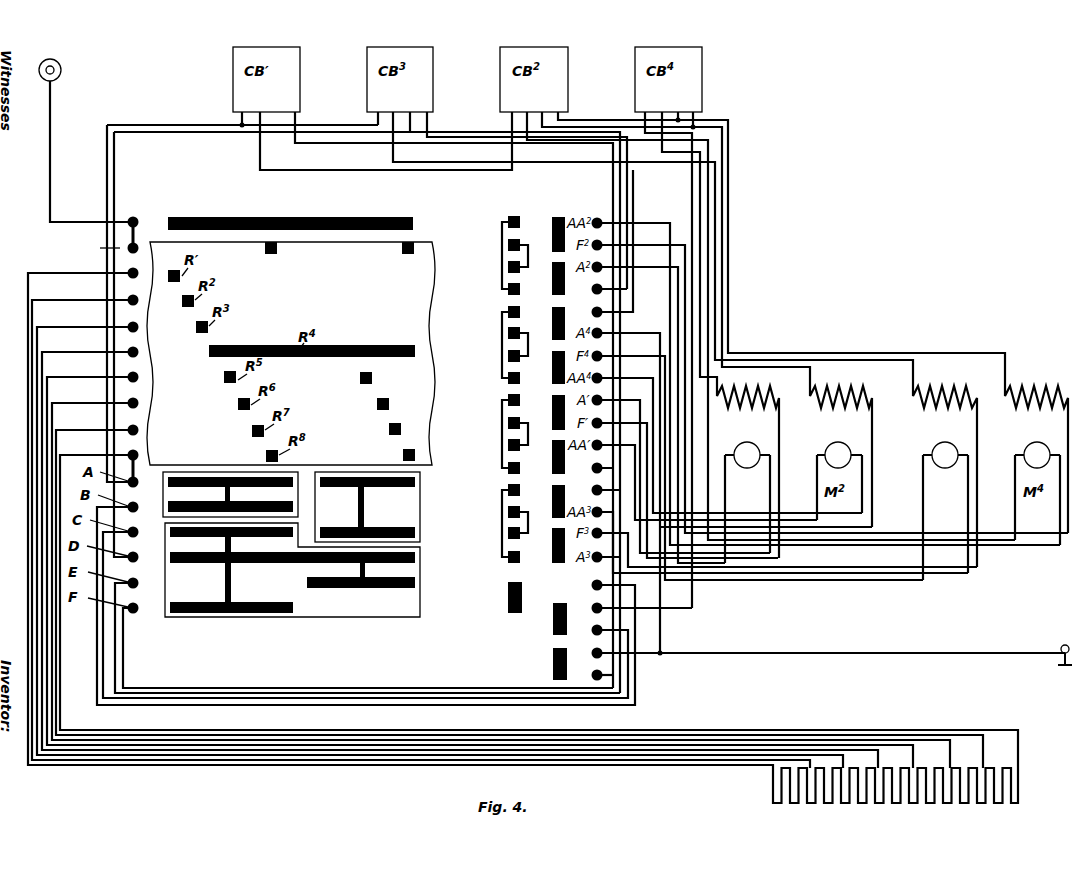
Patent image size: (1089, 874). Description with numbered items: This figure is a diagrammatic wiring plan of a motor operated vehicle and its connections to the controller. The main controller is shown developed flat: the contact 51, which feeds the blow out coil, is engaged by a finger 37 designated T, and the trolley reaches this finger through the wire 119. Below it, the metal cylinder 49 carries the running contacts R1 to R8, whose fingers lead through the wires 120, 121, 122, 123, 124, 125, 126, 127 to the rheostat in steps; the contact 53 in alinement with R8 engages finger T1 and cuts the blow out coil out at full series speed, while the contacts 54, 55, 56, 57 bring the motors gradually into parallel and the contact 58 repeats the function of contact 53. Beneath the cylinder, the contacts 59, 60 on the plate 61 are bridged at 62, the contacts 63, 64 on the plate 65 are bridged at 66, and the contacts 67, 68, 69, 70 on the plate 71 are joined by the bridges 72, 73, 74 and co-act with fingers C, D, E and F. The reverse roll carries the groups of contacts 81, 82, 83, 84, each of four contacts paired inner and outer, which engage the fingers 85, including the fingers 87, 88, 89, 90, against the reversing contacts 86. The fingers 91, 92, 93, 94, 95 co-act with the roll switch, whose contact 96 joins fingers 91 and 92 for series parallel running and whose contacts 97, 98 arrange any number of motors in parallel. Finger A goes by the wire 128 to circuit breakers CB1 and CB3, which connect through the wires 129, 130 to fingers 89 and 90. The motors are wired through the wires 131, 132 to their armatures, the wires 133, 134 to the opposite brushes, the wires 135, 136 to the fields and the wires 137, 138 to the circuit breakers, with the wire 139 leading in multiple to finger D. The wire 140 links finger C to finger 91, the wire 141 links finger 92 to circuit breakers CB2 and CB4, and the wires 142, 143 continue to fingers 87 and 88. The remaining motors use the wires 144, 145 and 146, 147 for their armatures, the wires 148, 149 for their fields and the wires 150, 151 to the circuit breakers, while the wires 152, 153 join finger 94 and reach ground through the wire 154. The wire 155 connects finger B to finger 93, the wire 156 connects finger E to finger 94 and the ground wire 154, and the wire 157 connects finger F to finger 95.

The contact finger 37 is at (137, 217).
The metal cylinder 49 is at (418, 317).
The contact 51 is at (273, 216).
The contact 53 is at (279, 250).
The contact 54 is at (359, 378).
The contact 55 is at (376, 404).
The contact 56 is at (388, 429).
The contact 57 is at (402, 456).
The contact 58 is at (401, 251).
The contact 59 is at (205, 472).
The contact 60 is at (165, 506).
The plate 61 is at (163, 494).
The bridge 62 is at (237, 476).
The contact 63 is at (416, 481).
The contact 64 is at (416, 534).
The plate 65 is at (426, 514).
The bridge 66 is at (370, 503).
The contact 67 is at (170, 541).
The contact 68 is at (285, 563).
The contact 69 is at (395, 590).
The contact 70 is at (300, 616).
The plate 71 is at (385, 612).
The bridge 72 is at (214, 558).
The bridge 73 is at (370, 568).
The bridge 74 is at (248, 570).
The group of contacts 81 is at (502, 262).
The group of contacts 82 is at (502, 350).
The group of contacts 83 is at (502, 422).
The group of contacts 84 is at (502, 522).
The contact finger 85 is at (595, 215).
The contact 86 is at (551, 378).
The contact finger 87 is at (583, 289).
The contact finger 88 is at (583, 312).
The contact finger 89 is at (583, 468).
The contact finger 90 is at (583, 490).
The contact finger 91 is at (583, 585).
The contact finger 92 is at (583, 608).
The contact finger 93 is at (583, 630).
The contact finger 94 is at (583, 653).
The contact finger 95 is at (593, 675).
The contact 96 is at (523, 606).
The contact 97 is at (553, 627).
The contact 98 is at (553, 670).
The wire 119 is at (52, 144).
The wire 120 is at (700, 770).
The wire 121 is at (421, 525).
The wire 122 is at (440, 538).
The wire 123 is at (460, 551).
The wire 124 is at (480, 563).
The wire 125 is at (501, 576).
The wire 126 is at (519, 590).
The wire 127 is at (759, 733).
The wire 128 is at (327, 140).
The wire 129 is at (366, 145).
The wire 130 is at (451, 141).
The wire 131 is at (772, 482).
The wire 132 is at (969, 495).
The wire 133 is at (724, 470).
The wire 134 is at (920, 470).
The wire 135 is at (779, 438).
The wire 136 is at (978, 438).
The wire 137 is at (298, 173).
The wire 138 is at (427, 165).
The wire 139 is at (184, 125).
The wire 140 is at (291, 704).
The wire 141 is at (668, 612).
The wire 142 is at (570, 118).
The wire 143 is at (697, 128).
The wire 144 is at (655, 223).
The wire 145 is at (765, 350).
The wire 146 is at (635, 310).
The wire 147 is at (680, 350).
The wire 148 is at (680, 275).
The wire 149 is at (715, 365).
The wire 150 is at (512, 171).
The wire 151 is at (643, 118).
The wire 152 is at (583, 118).
The wire 153 is at (700, 152).
The ground wire 154 is at (673, 656).
The wire 155 is at (367, 700).
The wire 156 is at (118, 636).
The wire 157 is at (124, 663).